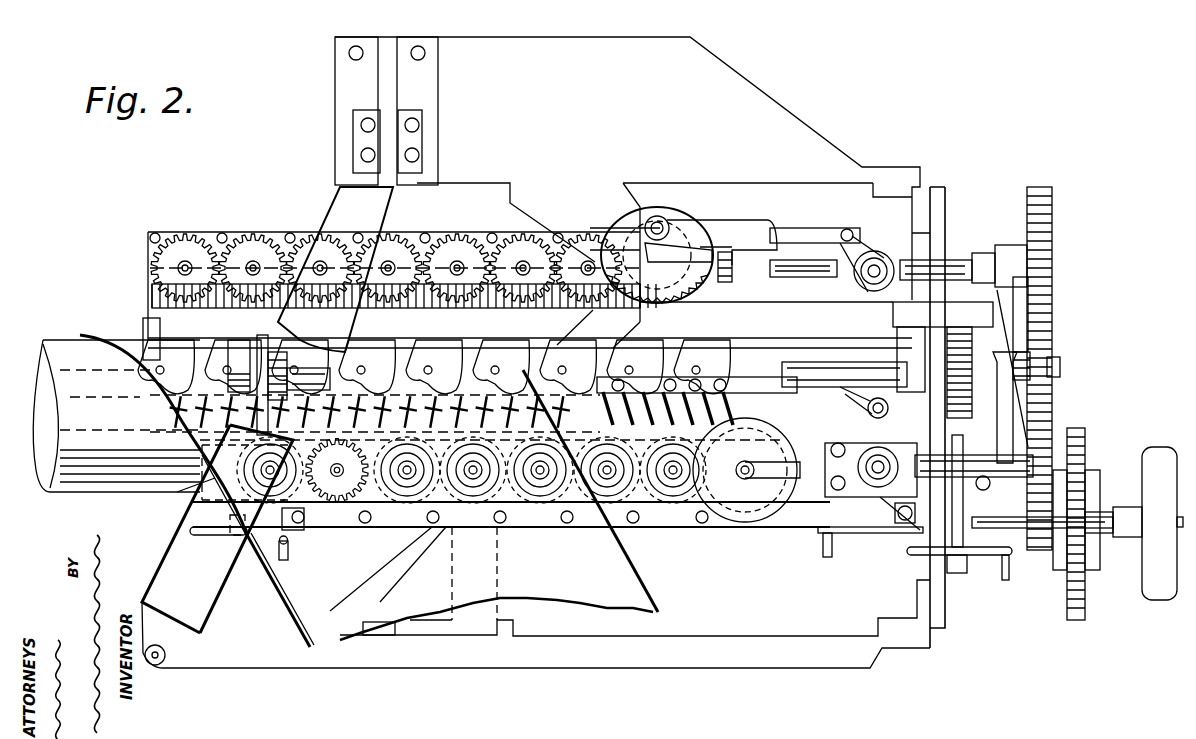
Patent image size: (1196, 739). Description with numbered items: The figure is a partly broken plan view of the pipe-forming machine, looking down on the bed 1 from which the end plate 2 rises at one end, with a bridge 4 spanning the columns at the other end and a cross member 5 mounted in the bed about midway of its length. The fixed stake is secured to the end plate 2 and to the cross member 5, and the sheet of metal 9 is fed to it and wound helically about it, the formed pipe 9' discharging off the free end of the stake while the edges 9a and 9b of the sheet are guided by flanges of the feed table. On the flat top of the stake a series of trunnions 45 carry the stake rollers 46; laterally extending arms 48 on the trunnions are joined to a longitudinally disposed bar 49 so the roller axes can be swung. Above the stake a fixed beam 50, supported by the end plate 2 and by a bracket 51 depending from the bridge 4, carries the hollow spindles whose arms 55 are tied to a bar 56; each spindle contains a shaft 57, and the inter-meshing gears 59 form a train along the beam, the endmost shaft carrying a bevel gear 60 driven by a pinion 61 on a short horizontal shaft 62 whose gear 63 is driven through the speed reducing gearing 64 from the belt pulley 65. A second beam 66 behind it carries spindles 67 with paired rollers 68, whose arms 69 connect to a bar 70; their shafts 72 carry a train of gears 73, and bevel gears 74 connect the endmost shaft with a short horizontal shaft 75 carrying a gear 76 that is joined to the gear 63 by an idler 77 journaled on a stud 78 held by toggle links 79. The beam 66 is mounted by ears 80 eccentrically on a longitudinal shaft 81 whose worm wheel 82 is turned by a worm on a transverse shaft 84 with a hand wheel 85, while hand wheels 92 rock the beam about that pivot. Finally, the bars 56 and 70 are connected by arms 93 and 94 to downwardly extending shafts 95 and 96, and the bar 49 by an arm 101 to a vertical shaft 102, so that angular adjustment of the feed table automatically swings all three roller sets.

The bed 1 is at (695, 683).
The end plate 2 is at (940, 612).
The bridge 4 is at (340, 205).
The cross member 5 is at (490, 612).
The sheet of metal 9 is at (491, 583).
The formed pipe 9' is at (116, 416).
The edge of the sheet 9a is at (278, 605).
The edge of the sheet 9b is at (655, 586).
The trunnions 45 is at (668, 417).
The stake rollers 46 is at (415, 402).
The laterally extending arms 48 is at (697, 370).
The longitudinally disposed bar 49 is at (760, 378).
The beam 50 is at (178, 491).
The bracket 51 is at (275, 352).
The arms 55 is at (565, 528).
The longitudinally disposed bar 56 is at (680, 525).
The shaft 57 is at (342, 505).
The inter-meshing gears 59 is at (400, 505).
The bevel gear 60 is at (765, 432).
The pinion 61 is at (778, 440).
The short horizontal shaft 62 is at (960, 455).
The gear 63 is at (1052, 423).
The speed reducing gearing 64 is at (1086, 455).
The belt pulley 65 is at (1134, 523).
The second beam 66 is at (877, 320).
The spindles 67 is at (544, 333).
The rollers 68 is at (640, 350).
The arms 69 is at (584, 235).
The longitudinally disposed bar 70 is at (275, 235).
The shafts 72 is at (457, 240).
The train of gears 73 is at (468, 240).
The bevel gears 74 is at (660, 216).
The short horizontal shaft 75 is at (948, 262).
The gear 76 is at (1052, 238).
The idler 77 is at (1030, 356).
The stud 78 is at (1060, 368).
The toggle links 79 is at (1030, 316).
The ears 80 is at (237, 360).
The longitudinal shaft 81 is at (312, 365).
The worm wheel 82 is at (965, 345).
The transverse shaft 84 is at (960, 510).
The hand wheel 85 is at (968, 560).
The hand wheels 92 is at (290, 548).
The arm 93 is at (900, 525).
The arm 94 is at (863, 247).
The downwardly extending shaft 95 is at (880, 455).
The downwardly extending shaft 96 is at (880, 258).
The arm 101 is at (863, 404).
The vertical shaft 102 is at (868, 415).